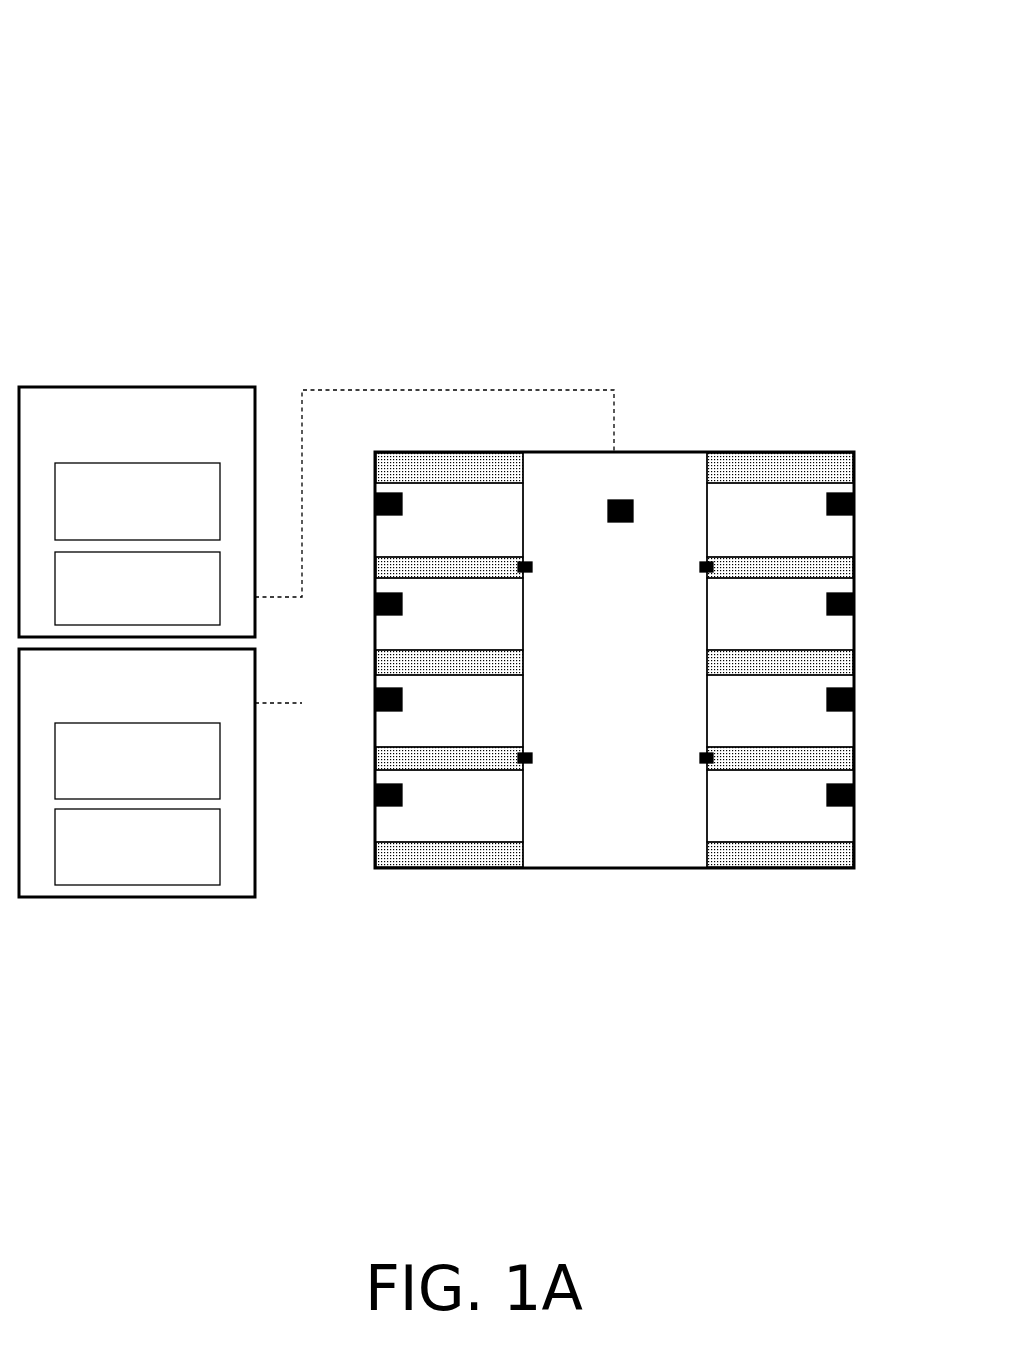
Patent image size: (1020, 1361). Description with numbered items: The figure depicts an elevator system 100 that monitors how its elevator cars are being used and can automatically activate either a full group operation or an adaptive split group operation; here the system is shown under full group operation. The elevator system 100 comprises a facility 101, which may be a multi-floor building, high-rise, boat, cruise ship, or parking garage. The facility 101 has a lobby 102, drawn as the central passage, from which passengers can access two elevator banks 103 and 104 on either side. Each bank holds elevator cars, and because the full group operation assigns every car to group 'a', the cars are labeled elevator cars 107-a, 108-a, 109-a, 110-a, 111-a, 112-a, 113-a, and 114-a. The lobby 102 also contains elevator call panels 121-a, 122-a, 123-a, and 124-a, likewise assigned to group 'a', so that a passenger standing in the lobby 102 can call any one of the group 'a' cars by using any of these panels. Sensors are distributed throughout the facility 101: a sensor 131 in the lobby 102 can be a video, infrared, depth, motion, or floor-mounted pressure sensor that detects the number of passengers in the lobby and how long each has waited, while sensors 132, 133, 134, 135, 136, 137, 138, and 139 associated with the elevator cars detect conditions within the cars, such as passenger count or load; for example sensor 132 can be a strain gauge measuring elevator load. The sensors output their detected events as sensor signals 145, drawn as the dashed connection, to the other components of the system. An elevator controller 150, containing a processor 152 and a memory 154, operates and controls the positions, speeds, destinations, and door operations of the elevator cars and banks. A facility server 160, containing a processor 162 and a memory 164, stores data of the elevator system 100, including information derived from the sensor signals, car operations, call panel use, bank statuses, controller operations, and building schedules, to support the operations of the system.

The elevator system 100 is at (849, 106).
The facility 101 is at (668, 450).
The lobby 102 is at (649, 844).
The elevator bank 103 is at (459, 871).
The elevator bank 104 is at (809, 871).
The elevator car 107-a is at (449, 520).
The elevator car 108-a is at (449, 614).
The elevator car 109-a is at (449, 711).
The elevator car 110-a is at (449, 806).
The elevator car 111-a is at (780, 520).
The elevator car 112-a is at (780, 614).
The elevator car 113-a is at (780, 711).
The elevator car 114-a is at (780, 806).
The elevator call panel 121-a is at (532, 565).
The elevator call panel 122-a is at (532, 755).
The elevator call panel 123-a is at (700, 565).
The elevator call panel 124-a is at (700, 755).
The sensor 131 is at (632, 500).
The sensor 132 is at (374, 503).
The sensor 133 is at (374, 602).
The sensor 134 is at (374, 698).
The sensor 135 is at (374, 793).
The sensor 136 is at (855, 502).
The sensor 137 is at (855, 601).
The sensor 138 is at (855, 697).
The sensor 139 is at (855, 792).
The sensor signals 145 is at (362, 390).
The elevator controller 150 is at (137, 512).
The processor 152 is at (137, 501).
The memory 154 is at (137, 588).
The facility server 160 is at (137, 773).
The processor 162 is at (137, 761).
The memory 164 is at (137, 847).